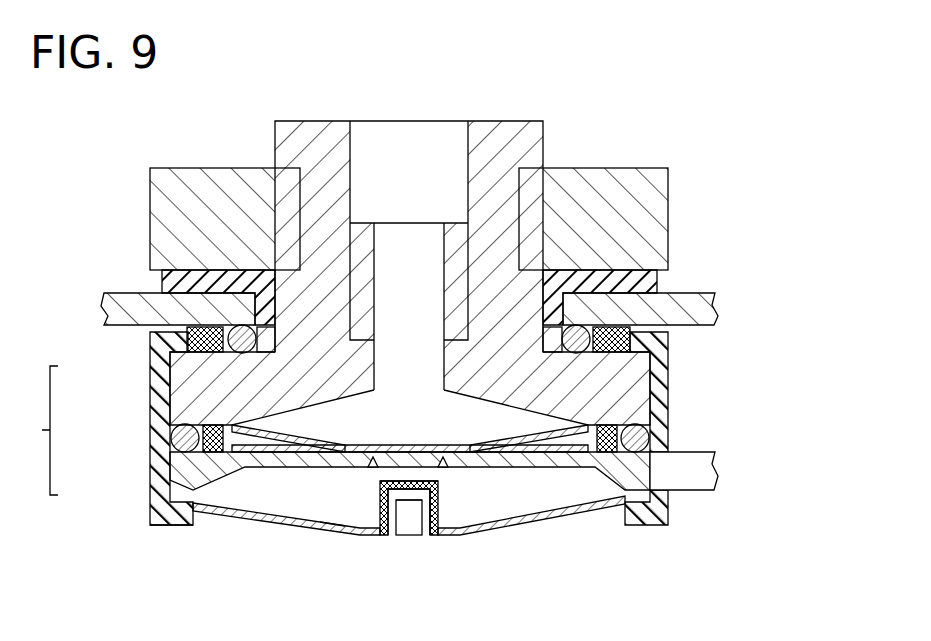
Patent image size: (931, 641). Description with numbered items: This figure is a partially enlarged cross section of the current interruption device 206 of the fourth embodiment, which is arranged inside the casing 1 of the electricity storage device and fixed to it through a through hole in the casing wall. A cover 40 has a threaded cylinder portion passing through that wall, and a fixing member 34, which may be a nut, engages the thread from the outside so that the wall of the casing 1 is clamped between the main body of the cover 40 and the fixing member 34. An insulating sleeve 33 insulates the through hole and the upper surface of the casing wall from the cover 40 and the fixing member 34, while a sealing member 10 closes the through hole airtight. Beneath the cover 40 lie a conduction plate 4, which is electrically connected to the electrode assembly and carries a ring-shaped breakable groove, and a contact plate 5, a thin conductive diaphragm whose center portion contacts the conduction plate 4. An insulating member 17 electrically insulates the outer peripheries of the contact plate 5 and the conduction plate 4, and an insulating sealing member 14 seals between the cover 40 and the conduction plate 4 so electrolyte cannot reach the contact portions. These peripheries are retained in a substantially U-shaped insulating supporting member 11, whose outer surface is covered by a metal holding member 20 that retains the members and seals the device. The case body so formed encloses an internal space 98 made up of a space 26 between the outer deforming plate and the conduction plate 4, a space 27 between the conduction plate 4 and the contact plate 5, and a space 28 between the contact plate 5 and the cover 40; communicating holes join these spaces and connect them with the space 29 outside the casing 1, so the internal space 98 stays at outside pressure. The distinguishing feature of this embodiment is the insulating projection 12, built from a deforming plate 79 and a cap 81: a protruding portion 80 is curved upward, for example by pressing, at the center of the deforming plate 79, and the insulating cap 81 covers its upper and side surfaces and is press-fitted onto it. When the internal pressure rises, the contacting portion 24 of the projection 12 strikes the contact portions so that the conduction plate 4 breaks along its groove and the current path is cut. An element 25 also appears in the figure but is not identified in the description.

The current interruption device 206 is at (702, 135).
The cover 40 is at (318, 140).
The fixing member 34 is at (563, 175).
The space outside the casing 29 is at (124, 155).
The insulating sleeve 33 is at (163, 279).
The casing 1 is at (713, 311).
The sealing member 10 is at (592, 378).
The holding member 20 is at (672, 381).
The housing bottom 25 is at (127, 533).
The space 28 is at (393, 383).
The space 27 is at (242, 438).
The internal space 98 is at (33, 430).
The supporting member 11 is at (618, 424).
The insulating member 17 is at (638, 425).
The space 26 is at (237, 493).
The sealing member 14 is at (648, 463).
The contact plate 5 is at (264, 470).
The deforming plate 79 is at (330, 530).
The conduction plate 4 is at (320, 462).
The contacting portion 24 is at (402, 475).
The protruding portion 80 is at (413, 503).
The cap 81 is at (437, 513).
The insulating projection 12 is at (446, 485).